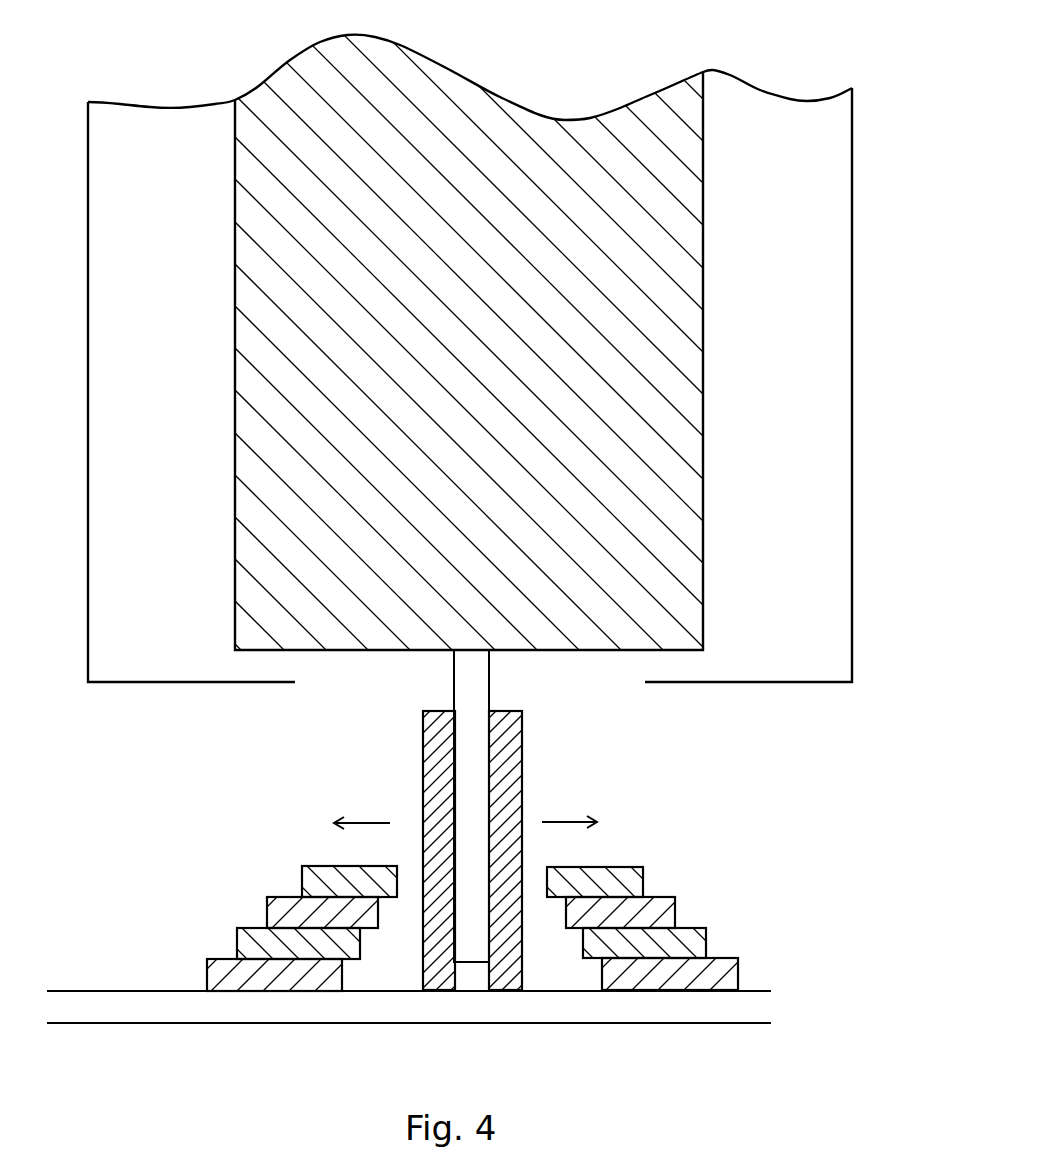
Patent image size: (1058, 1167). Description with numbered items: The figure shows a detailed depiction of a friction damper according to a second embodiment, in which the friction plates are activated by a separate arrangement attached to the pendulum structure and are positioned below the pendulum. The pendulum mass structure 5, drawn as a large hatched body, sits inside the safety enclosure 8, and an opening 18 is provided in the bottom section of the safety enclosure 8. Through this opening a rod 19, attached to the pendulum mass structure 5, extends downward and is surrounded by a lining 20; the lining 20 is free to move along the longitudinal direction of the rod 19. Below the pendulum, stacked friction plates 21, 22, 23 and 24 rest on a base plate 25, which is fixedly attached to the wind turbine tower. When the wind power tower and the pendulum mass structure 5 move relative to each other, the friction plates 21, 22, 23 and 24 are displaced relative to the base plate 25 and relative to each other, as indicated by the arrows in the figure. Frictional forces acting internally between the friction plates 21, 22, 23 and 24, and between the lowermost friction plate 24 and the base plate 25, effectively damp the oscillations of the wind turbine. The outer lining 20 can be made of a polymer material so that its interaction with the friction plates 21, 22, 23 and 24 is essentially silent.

The pendulum mass structure 5 is at (447, 77).
The safety enclosure 8 is at (857, 303).
The opening 18 is at (360, 683).
The rod 19 is at (465, 735).
The lining 20 is at (512, 778).
The friction plate 21 is at (637, 877).
The friction plate 22 is at (665, 908).
The friction plate 23 is at (698, 940).
The friction plate 24 is at (727, 970).
The base plate 25 is at (317, 1018).